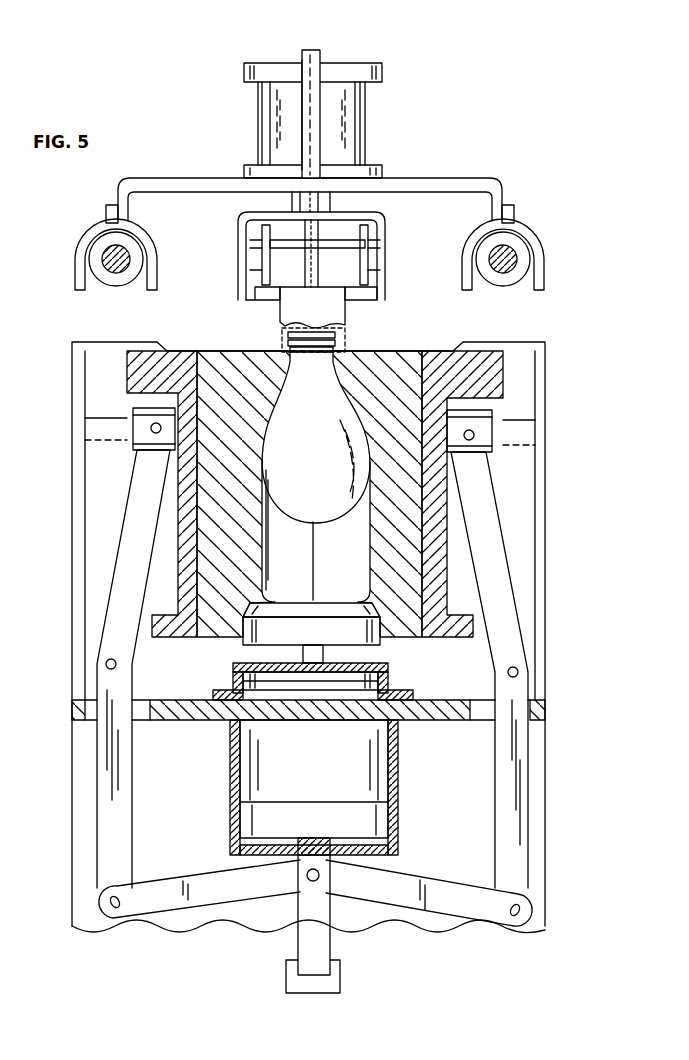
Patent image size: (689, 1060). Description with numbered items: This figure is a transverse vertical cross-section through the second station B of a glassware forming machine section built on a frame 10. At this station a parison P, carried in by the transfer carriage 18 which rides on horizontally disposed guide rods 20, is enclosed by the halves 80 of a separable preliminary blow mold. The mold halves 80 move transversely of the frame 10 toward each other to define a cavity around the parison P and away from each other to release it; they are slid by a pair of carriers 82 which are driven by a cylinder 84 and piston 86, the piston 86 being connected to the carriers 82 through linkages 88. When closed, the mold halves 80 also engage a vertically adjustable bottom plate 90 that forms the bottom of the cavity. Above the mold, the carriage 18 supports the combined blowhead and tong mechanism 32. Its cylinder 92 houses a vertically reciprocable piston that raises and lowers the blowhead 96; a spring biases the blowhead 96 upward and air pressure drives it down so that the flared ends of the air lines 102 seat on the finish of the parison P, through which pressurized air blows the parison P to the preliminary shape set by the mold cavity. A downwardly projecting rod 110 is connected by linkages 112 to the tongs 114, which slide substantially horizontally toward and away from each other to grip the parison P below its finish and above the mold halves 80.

The frame 10 is at (549, 480).
The carriage 18 is at (424, 177).
The guide rods 20 is at (116, 272).
The combined blowhead and tong mechanism 32 is at (336, 57).
The preliminary blow mold halves 80 is at (254, 350).
The carriers 82 is at (190, 350).
The cylinder 84 is at (418, 786).
The piston 86 is at (328, 806).
The linkages 88 is at (146, 551).
The bottom plate 90 is at (324, 643).
The cylinder 92 is at (349, 134).
The blowhead 96 is at (385, 228).
The air lines 102 is at (308, 126).
The rod 110 is at (320, 280).
The linkages 112 is at (260, 257).
The tongs 114 is at (323, 316).
The second station B is at (416, 346).
The parison P is at (315, 456).